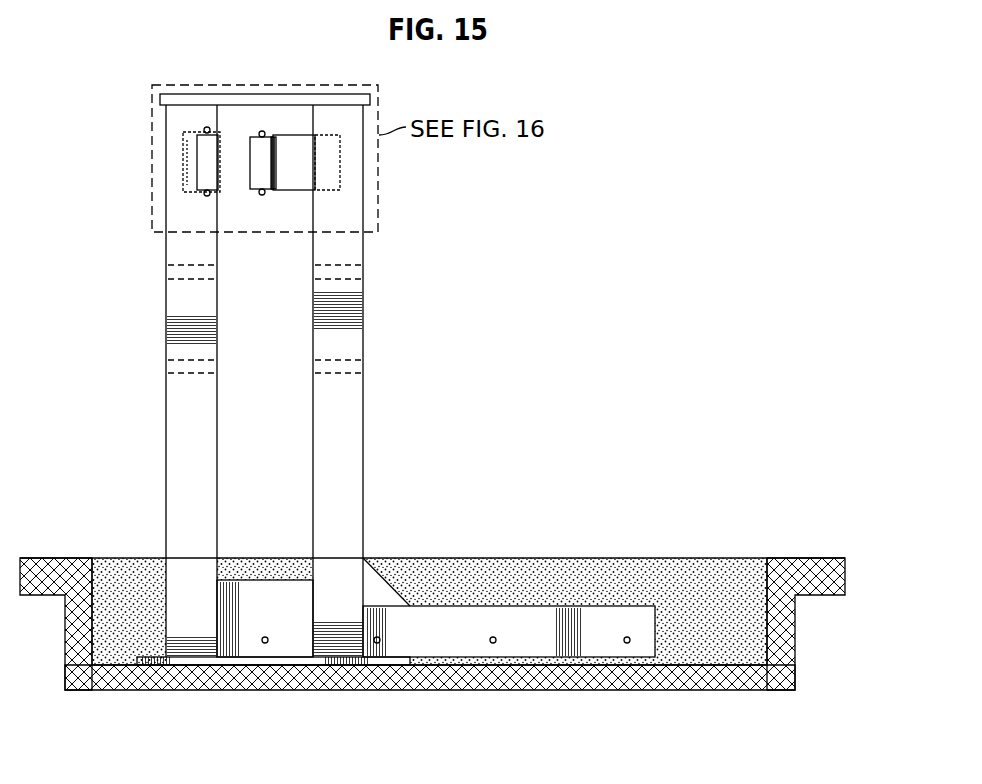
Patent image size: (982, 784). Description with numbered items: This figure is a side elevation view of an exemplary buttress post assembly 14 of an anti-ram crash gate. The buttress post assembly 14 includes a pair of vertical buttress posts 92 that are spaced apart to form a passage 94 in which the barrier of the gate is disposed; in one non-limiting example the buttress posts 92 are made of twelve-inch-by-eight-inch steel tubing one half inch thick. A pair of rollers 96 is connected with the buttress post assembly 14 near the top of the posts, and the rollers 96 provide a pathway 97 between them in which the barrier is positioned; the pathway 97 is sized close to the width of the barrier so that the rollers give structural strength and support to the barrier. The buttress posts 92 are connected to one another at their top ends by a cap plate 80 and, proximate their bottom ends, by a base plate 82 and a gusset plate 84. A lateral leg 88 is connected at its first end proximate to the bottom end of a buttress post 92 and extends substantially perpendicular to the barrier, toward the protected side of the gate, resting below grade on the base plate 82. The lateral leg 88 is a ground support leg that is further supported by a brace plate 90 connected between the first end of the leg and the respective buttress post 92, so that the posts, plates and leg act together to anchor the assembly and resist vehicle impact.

The buttress post assembly 14 is at (493, 310).
The cap plate 80 is at (282, 92).
The base plate 82 is at (252, 661).
The gusset plate 84 is at (262, 605).
The lateral leg 88 is at (530, 640).
The brace plate 90 is at (378, 577).
The buttress post 92 is at (178, 466).
The passage 94 is at (281, 400).
The roller 96 is at (226, 146).
The pathway 97 is at (237, 179).